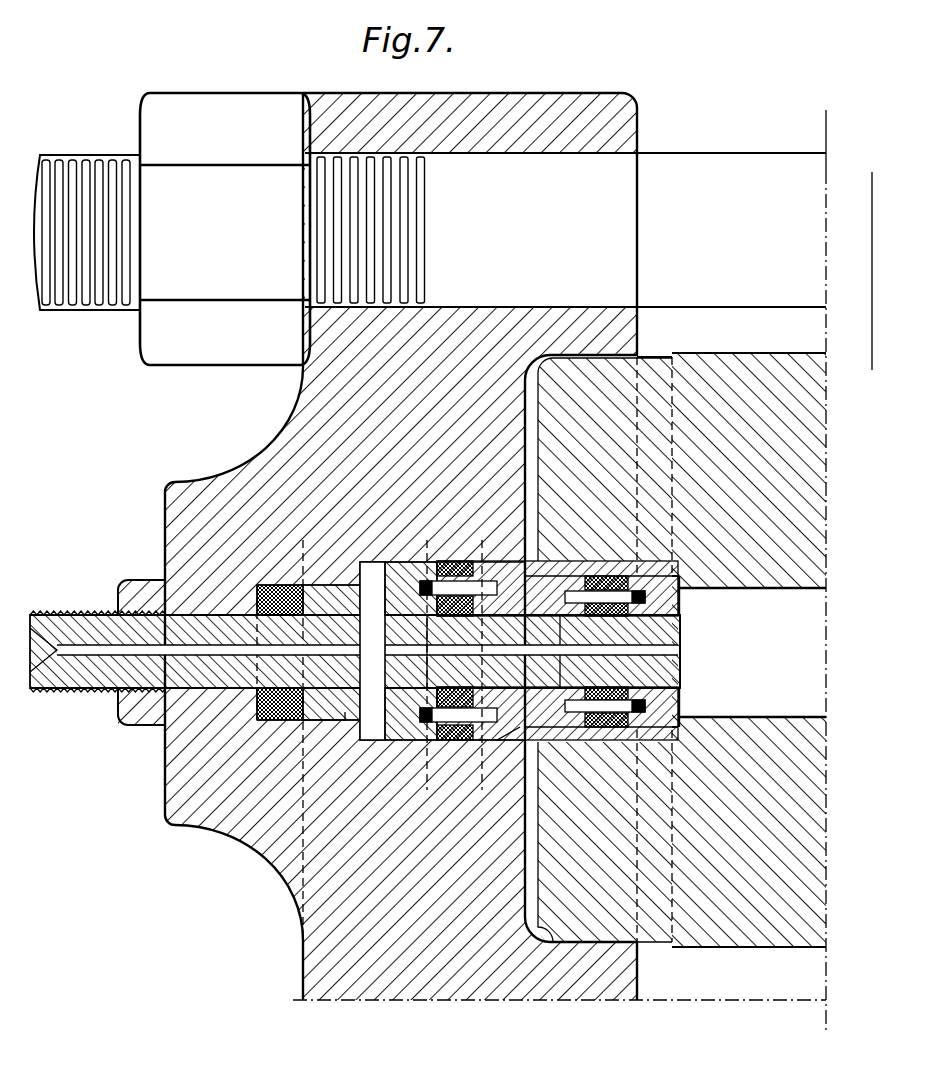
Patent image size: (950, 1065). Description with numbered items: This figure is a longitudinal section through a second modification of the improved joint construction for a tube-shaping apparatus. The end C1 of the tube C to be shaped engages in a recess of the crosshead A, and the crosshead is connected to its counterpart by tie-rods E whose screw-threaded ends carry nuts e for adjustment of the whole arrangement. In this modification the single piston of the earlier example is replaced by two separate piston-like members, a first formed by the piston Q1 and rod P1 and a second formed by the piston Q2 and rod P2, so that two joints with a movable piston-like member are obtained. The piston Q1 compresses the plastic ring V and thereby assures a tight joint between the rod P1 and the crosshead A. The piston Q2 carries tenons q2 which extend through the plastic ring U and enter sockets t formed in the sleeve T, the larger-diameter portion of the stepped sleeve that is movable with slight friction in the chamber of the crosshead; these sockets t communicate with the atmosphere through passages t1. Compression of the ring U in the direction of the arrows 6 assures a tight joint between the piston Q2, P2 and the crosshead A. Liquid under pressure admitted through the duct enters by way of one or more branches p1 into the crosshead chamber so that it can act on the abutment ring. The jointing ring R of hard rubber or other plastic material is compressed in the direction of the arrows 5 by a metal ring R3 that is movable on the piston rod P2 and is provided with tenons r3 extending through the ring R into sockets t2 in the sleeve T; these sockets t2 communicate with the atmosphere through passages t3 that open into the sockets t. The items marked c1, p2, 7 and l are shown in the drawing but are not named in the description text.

The crosshead A is at (275, 457).
The tie-rods E is at (702, 163).
The nuts e is at (210, 348).
The tube C is at (807, 485).
The end of the tube C1 is at (652, 375).
The ring seat c1 is at (689, 578).
The metal ring R3 is at (680, 608).
The piston rod P1 is at (212, 675).
The branches p1 is at (105, 653).
The rod passage p2 is at (668, 651).
The piston rod P2 is at (678, 672).
The plastic ring V is at (276, 585).
The piston Q1 is at (340, 582).
The piston Q2 is at (390, 564).
The groove 7 is at (340, 727).
The arrows 6 is at (415, 566).
The plastic ring U is at (446, 566).
The tenons q2 is at (470, 566).
The sleeve T is at (506, 568).
The sockets t is at (512, 740).
The passages t1 is at (545, 563).
The sockets t2 is at (600, 577).
The passages t3 is at (582, 577).
The tenons r3 is at (622, 577).
The jointing ring R is at (585, 745).
The sleeve l is at (493, 637).
The arrows 5 is at (672, 578).